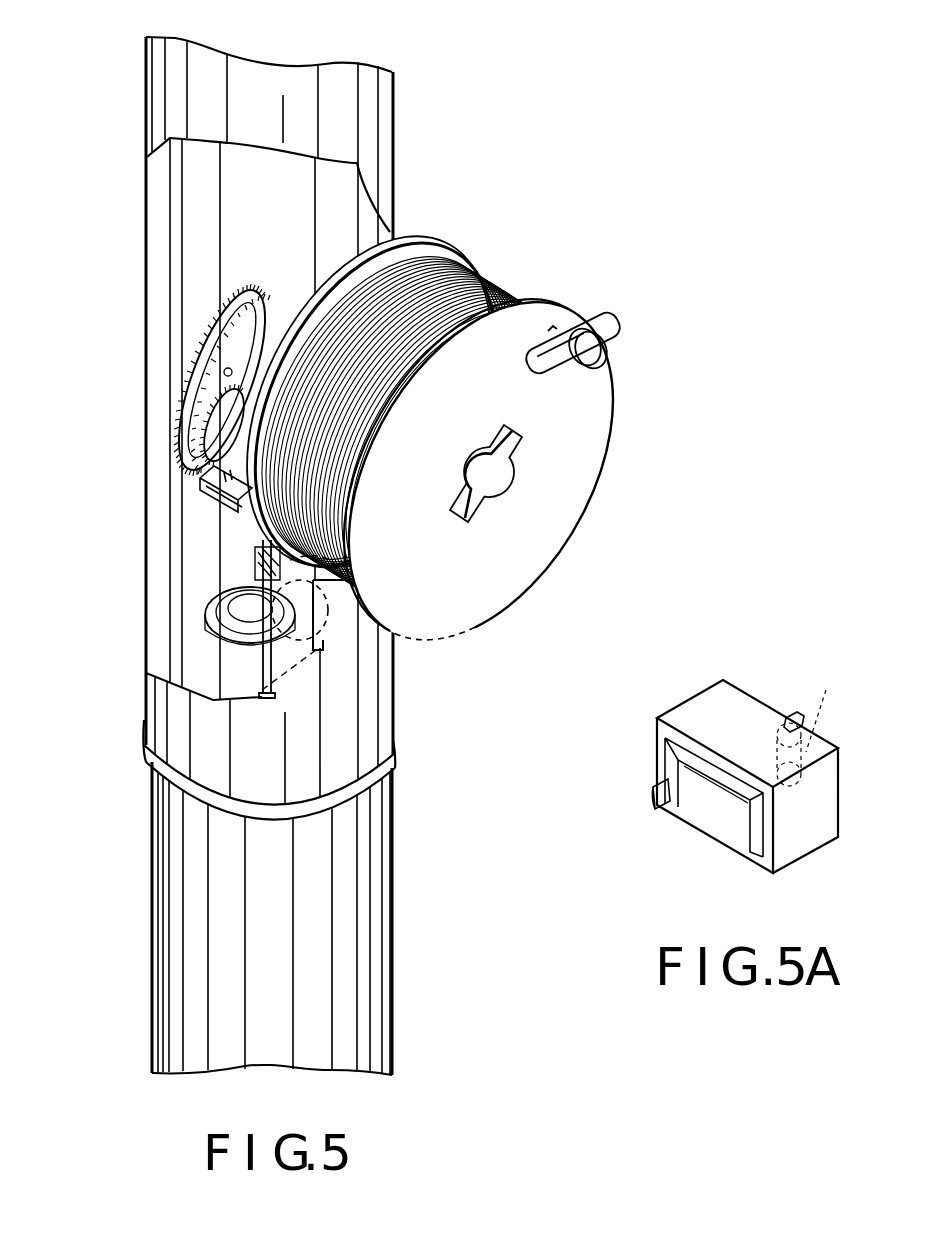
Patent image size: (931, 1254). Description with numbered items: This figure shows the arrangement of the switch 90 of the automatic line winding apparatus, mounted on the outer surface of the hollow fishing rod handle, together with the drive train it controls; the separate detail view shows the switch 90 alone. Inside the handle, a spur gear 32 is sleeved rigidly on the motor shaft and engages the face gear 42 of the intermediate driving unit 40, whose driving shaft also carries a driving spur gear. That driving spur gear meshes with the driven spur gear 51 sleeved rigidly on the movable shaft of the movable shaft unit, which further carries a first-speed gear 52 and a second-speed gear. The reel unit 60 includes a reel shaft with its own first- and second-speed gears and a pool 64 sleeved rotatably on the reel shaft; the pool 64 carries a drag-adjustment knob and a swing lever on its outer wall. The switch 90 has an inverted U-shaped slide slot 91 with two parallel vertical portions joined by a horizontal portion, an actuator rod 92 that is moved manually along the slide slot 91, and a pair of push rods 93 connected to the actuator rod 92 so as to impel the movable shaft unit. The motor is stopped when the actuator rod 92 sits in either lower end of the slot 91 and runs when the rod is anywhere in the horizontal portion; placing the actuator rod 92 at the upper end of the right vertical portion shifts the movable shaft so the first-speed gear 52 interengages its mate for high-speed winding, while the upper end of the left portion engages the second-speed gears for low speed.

In FIG. 5, the spur gear 32 is at (241, 556).
In FIG. 5, the intermediate driving unit 40 is at (228, 503).
In FIG. 5, the face gear 42 is at (398, 636).
In FIG. 5, the driven spur gear 51 is at (200, 395).
In FIG. 5, the first-speed gear 52 is at (232, 430).
In FIG. 5, the reel unit 60 is at (436, 427).
In FIG. 5, the pool 64 is at (585, 417).
In FIG. 5, the switch 90 is at (200, 487).
In FIG. 5A, the switch 90 is at (805, 845).
In FIG. 5A, the inverted U-shaped slide slot 91 is at (752, 838).
In FIG. 5A, the actuator rod 92 is at (668, 800).
In FIG. 5, the push rods 93 is at (228, 372).
In FIG. 5A, the push rods 93 is at (800, 720).